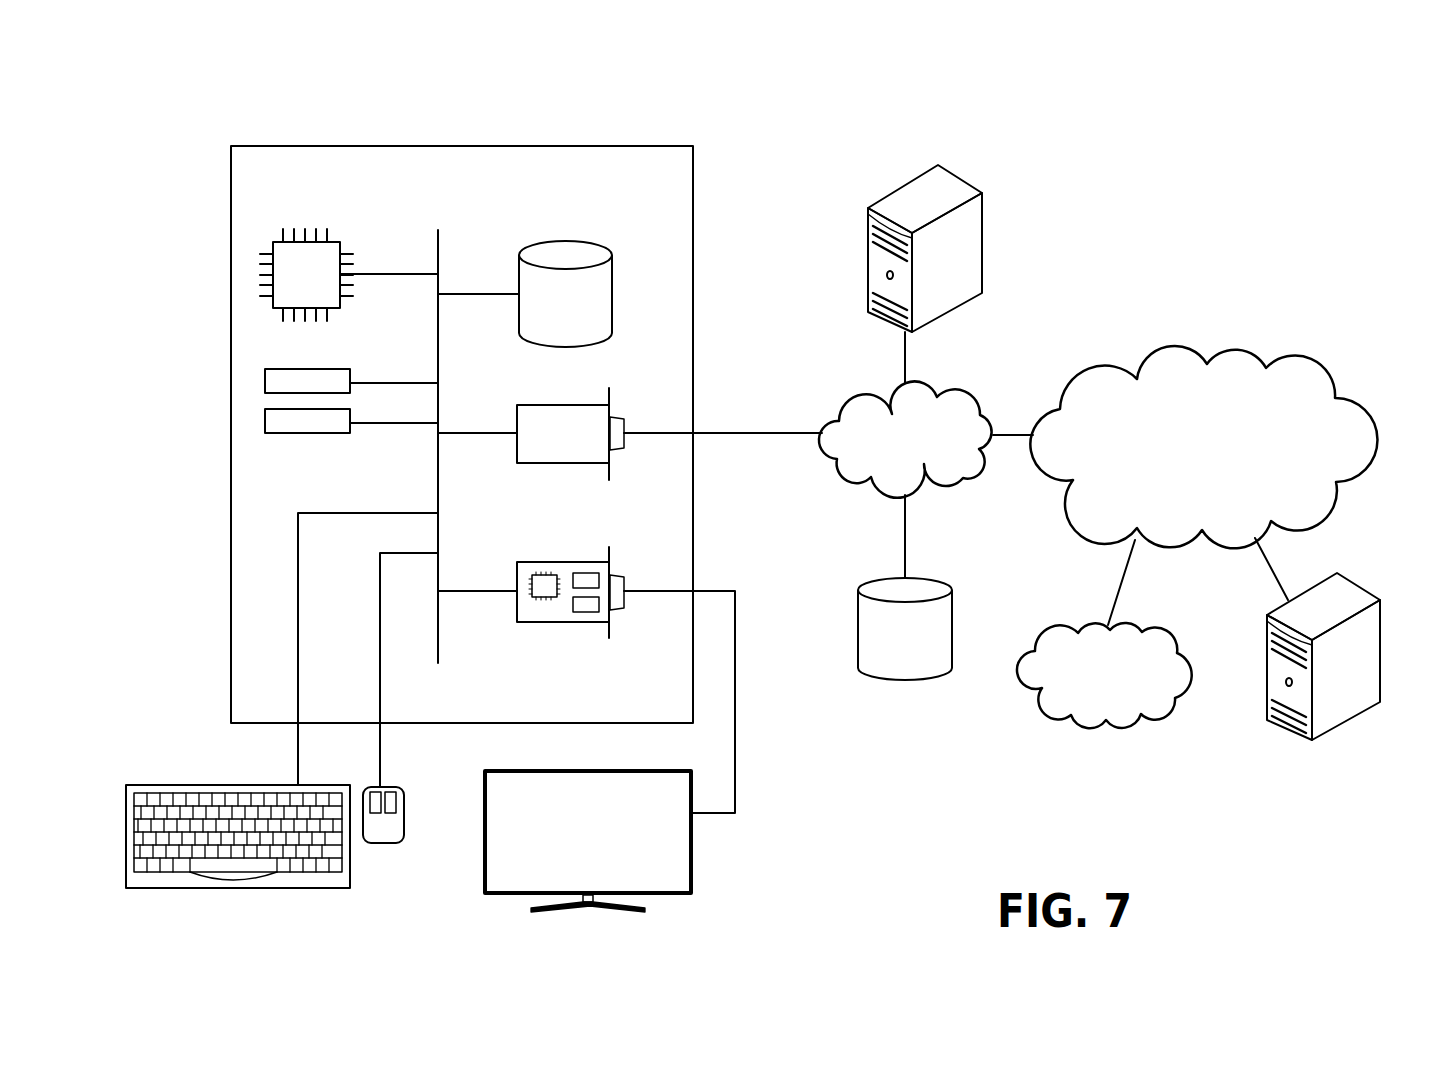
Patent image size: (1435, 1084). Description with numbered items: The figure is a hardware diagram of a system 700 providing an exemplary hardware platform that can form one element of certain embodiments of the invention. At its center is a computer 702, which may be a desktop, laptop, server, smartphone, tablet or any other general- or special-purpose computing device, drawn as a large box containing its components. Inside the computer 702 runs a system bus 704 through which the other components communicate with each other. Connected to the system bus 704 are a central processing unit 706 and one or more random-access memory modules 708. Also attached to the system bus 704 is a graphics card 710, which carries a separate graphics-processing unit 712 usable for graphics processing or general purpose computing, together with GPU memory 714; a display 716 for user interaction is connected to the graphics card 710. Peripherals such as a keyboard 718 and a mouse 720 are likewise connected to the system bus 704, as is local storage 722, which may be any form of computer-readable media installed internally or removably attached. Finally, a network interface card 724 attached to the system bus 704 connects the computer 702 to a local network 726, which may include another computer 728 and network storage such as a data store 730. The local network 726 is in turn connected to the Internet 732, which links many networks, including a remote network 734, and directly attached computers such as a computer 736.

The system 700 is at (330, 84).
The computer 702 is at (644, 146).
The system bus 704 is at (440, 243).
The central processing unit 706 is at (333, 240).
The random-access memory modules 708 is at (352, 417).
The graphics card 710 is at (545, 593).
The graphics-processing unit 712 is at (543, 592).
The GPU memory 714 is at (584, 612).
The display 716 is at (695, 875).
The keyboard 718 is at (240, 889).
The mouse 720 is at (380, 845).
The local storage 722 is at (614, 276).
The network interface card 724 is at (517, 415).
The local network 726 is at (963, 387).
The computer 728 is at (967, 181).
The data store 730 is at (942, 581).
The Internet 732 is at (1253, 351).
The remote network 734 is at (1163, 629).
The computer 736 is at (1355, 582).